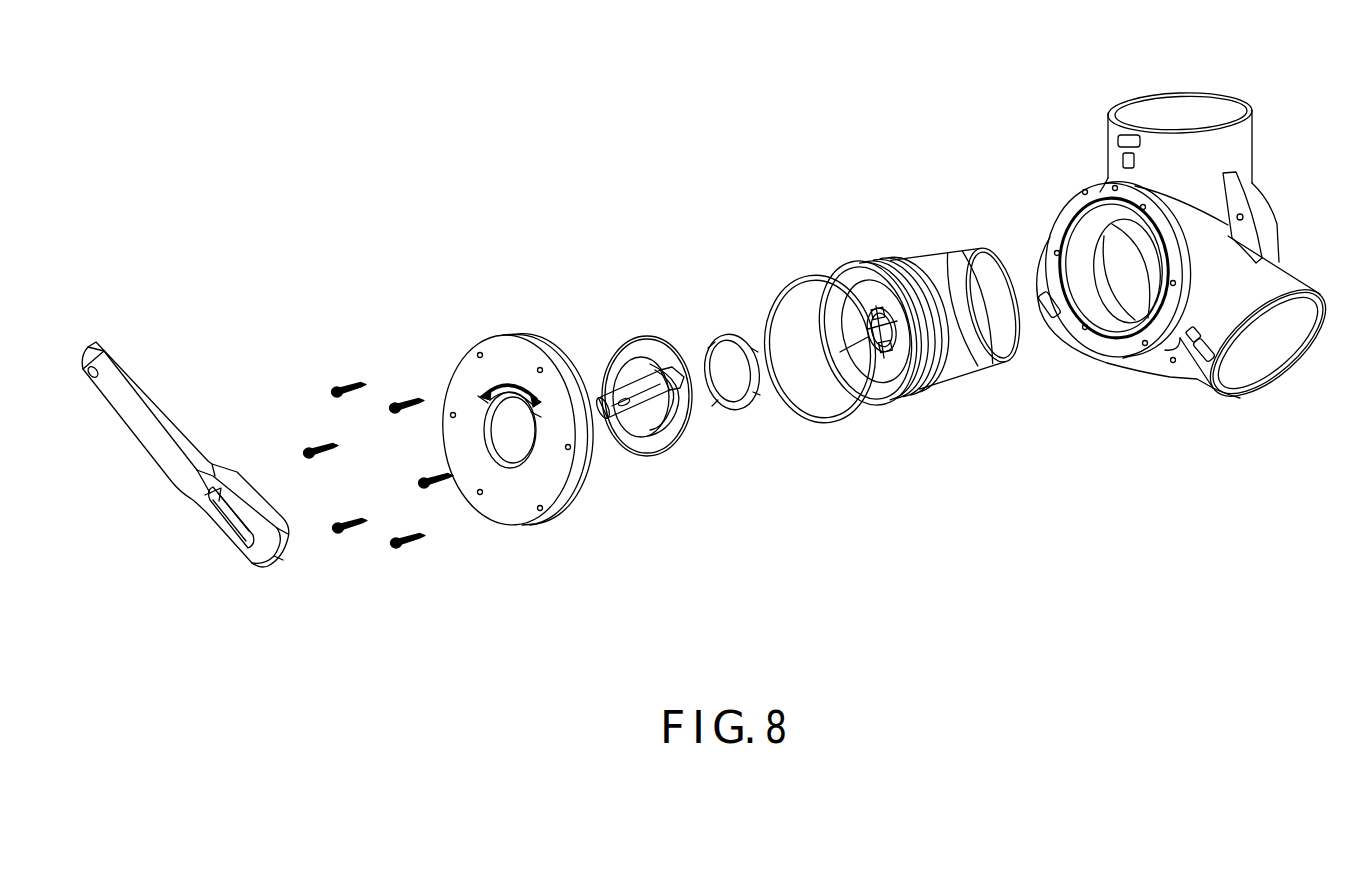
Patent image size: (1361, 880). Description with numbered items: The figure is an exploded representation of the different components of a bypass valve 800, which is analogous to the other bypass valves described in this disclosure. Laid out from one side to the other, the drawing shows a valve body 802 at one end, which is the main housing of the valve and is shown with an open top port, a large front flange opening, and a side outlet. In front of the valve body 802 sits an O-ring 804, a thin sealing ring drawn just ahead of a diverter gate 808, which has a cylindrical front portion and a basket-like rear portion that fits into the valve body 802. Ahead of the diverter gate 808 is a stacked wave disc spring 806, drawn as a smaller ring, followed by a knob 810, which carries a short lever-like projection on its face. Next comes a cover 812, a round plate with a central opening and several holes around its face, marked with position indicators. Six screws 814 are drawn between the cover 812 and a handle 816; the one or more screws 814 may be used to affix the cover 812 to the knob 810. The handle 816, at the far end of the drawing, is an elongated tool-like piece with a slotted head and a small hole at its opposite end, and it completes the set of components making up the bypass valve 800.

The bypass valve 800 is at (397, 124).
The valve body 802 is at (1248, 88).
The O-ring 804 is at (802, 268).
The stacked wave disc spring 806 is at (756, 415).
The diverter gate 808 is at (890, 243).
The knob 810 is at (661, 462).
The cover 812 is at (513, 323).
The screws 814 is at (414, 555).
The handle 816 is at (199, 437).